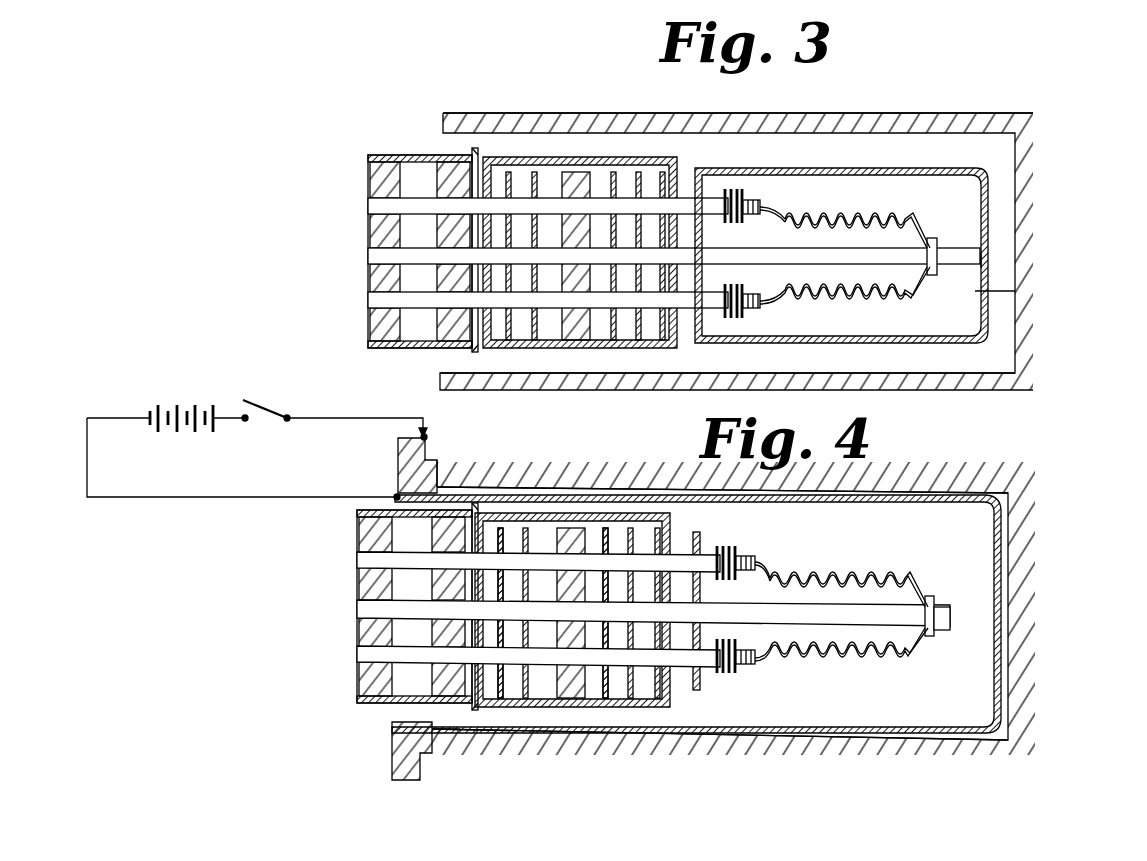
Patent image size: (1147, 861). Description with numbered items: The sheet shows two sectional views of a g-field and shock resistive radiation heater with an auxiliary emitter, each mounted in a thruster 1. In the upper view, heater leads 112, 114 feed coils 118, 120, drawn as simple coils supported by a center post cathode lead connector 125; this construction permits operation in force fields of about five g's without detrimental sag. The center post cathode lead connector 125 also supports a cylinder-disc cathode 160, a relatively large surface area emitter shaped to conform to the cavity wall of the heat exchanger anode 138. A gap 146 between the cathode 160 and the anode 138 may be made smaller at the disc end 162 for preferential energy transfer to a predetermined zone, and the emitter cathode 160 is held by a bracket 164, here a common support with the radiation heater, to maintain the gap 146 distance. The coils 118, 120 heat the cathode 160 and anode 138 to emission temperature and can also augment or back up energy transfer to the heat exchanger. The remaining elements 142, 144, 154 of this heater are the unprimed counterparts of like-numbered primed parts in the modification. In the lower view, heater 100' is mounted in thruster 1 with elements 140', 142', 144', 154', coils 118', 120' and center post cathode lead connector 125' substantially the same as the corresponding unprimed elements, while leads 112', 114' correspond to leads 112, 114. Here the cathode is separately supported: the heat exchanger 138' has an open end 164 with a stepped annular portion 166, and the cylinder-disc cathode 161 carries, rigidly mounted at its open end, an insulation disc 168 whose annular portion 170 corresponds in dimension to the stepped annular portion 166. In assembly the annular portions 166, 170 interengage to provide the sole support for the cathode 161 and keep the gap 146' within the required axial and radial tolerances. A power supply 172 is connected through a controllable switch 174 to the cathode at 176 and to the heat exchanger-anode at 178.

In FIG. 3, the thruster 1 is at (880, 132).
In FIG. 4, the thruster 1 is at (925, 487).
In FIG. 4, the heater 100' is at (359, 606).
In FIG. 3, the heater lead 112 is at (507, 299).
In FIG. 4, the lower electrode 112' is at (500, 650).
In FIG. 3, the heater lead 114 is at (507, 201).
In FIG. 4, the upper electrode 114' is at (500, 563).
In FIG. 3, the coil 118 is at (845, 300).
In FIG. 4, the coil 118' is at (841, 671).
In FIG. 3, the coil 120 is at (845, 213).
In FIG. 4, the coil 120' is at (841, 564).
In FIG. 3, the center post cathode lead connector 125 is at (633, 256).
In FIG. 4, the center post cathode lead connector 125' is at (653, 613).
In FIG. 3, the heat exchanger anode 138 is at (769, 251).
In FIG. 4, the heat exchanger 138' is at (770, 608).
In FIG. 4, the heater element 140' is at (591, 573).
In FIG. 3, the heat shield block 142 is at (593, 266).
In FIG. 4, the heater element 142' is at (587, 648).
In FIG. 3, the terminal connector 144 is at (655, 283).
In FIG. 4, the heater element 144' is at (763, 616).
In FIG. 3, the gap 146 is at (727, 389).
In FIG. 4, the gap 146' is at (720, 756).
In FIG. 3, the insulating spacer 154 is at (503, 214).
In FIG. 4, the heater element 154' is at (448, 572).
In FIG. 3, the cylinder-disc cathode 160 is at (1005, 222).
In FIG. 4, the cylinder-disc cathode 161 is at (1005, 550).
In FIG. 3, the disc end 162 is at (1015, 292).
In FIG. 3, the bracket / open end 164 is at (958, 255).
In FIG. 4, the bracket / open end 164 is at (386, 738).
In FIG. 4, the stepped annular portion 166 is at (430, 745).
In FIG. 4, the insulation disc 168 is at (398, 457).
In FIG. 4, the annular portion 170 is at (432, 458).
In FIG. 4, the power supply 172 is at (170, 405).
In FIG. 4, the controllable switch 174 is at (285, 415).
In FIG. 4, the cathode connection 176 is at (397, 496).
In FIG. 4, the heat exchanger-anode connection 178 is at (427, 438).